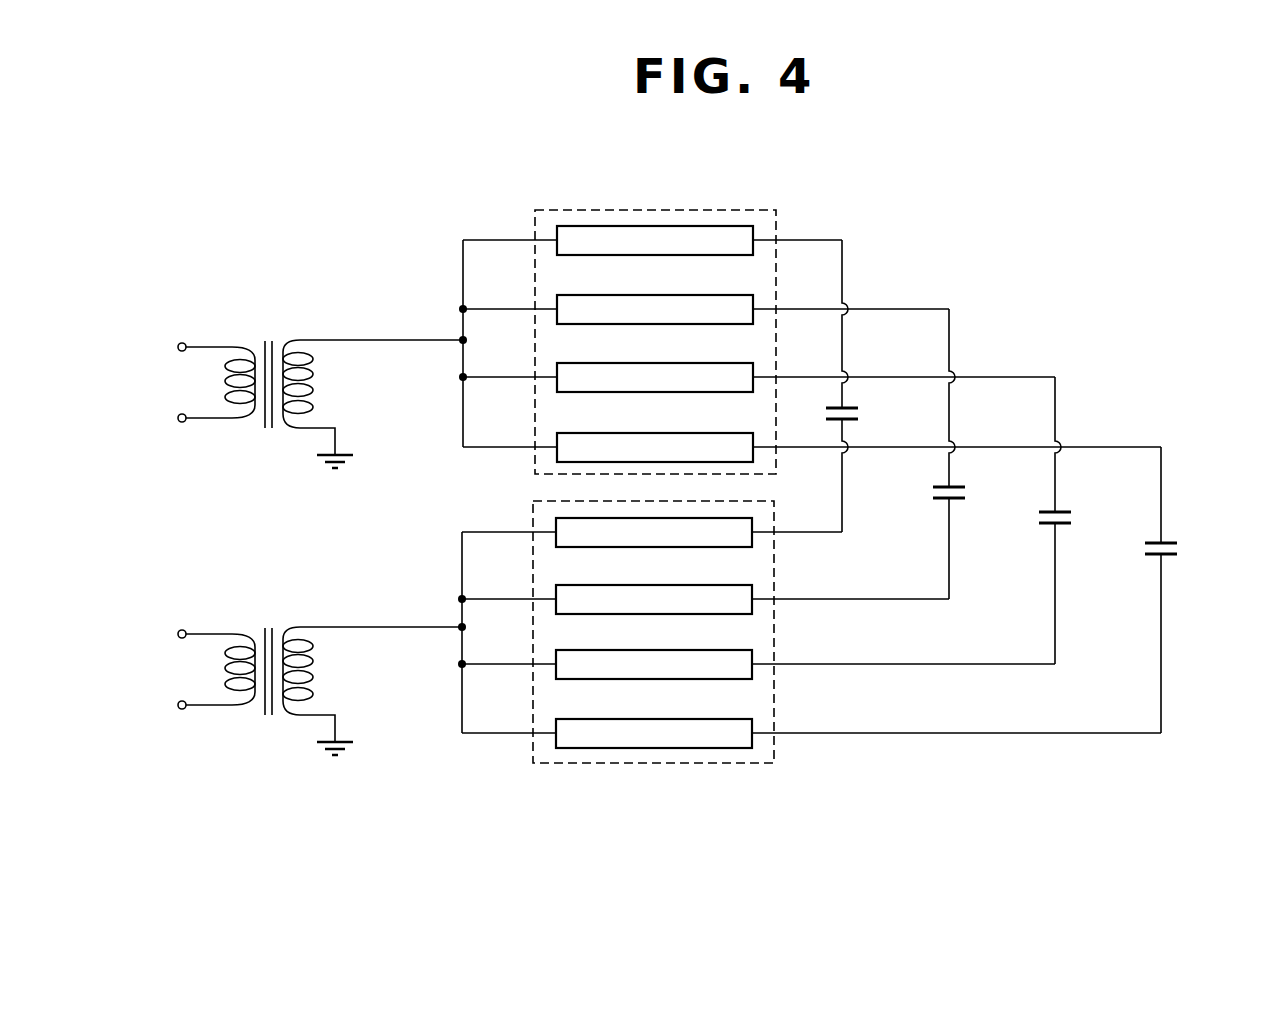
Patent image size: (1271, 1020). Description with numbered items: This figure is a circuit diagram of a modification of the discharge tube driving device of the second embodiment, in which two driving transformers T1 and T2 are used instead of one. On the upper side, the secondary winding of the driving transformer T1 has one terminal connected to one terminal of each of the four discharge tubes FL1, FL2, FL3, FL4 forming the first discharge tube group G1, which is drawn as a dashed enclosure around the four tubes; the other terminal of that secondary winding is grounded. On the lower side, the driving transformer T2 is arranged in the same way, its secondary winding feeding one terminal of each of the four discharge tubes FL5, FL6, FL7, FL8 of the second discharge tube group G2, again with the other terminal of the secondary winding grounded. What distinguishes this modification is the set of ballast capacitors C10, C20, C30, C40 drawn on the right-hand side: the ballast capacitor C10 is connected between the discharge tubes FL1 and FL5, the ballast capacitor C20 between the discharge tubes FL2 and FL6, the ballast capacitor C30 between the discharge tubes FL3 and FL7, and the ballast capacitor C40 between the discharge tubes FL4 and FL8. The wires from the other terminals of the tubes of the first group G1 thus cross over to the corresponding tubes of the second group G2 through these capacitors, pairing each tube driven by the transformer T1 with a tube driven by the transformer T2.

The driving transformer T1 is at (320, 389).
The driving transformer T2 is at (320, 677).
The first discharge tube group G1 is at (611, 209).
The second discharge tube group G2 is at (595, 764).
The discharge tube FL1 is at (722, 228).
The discharge tube FL2 is at (671, 295).
The discharge tube FL3 is at (671, 363).
The discharge tube FL4 is at (671, 433).
The discharge tube FL5 is at (670, 547).
The discharge tube FL6 is at (670, 614).
The discharge tube FL7 is at (670, 679).
The discharge tube FL8 is at (704, 747).
The ballast capacitor C10 is at (862, 413).
The ballast capacitor C20 is at (969, 492).
The ballast capacitor C30 is at (1076, 517).
The ballast capacitor C40 is at (1183, 548).